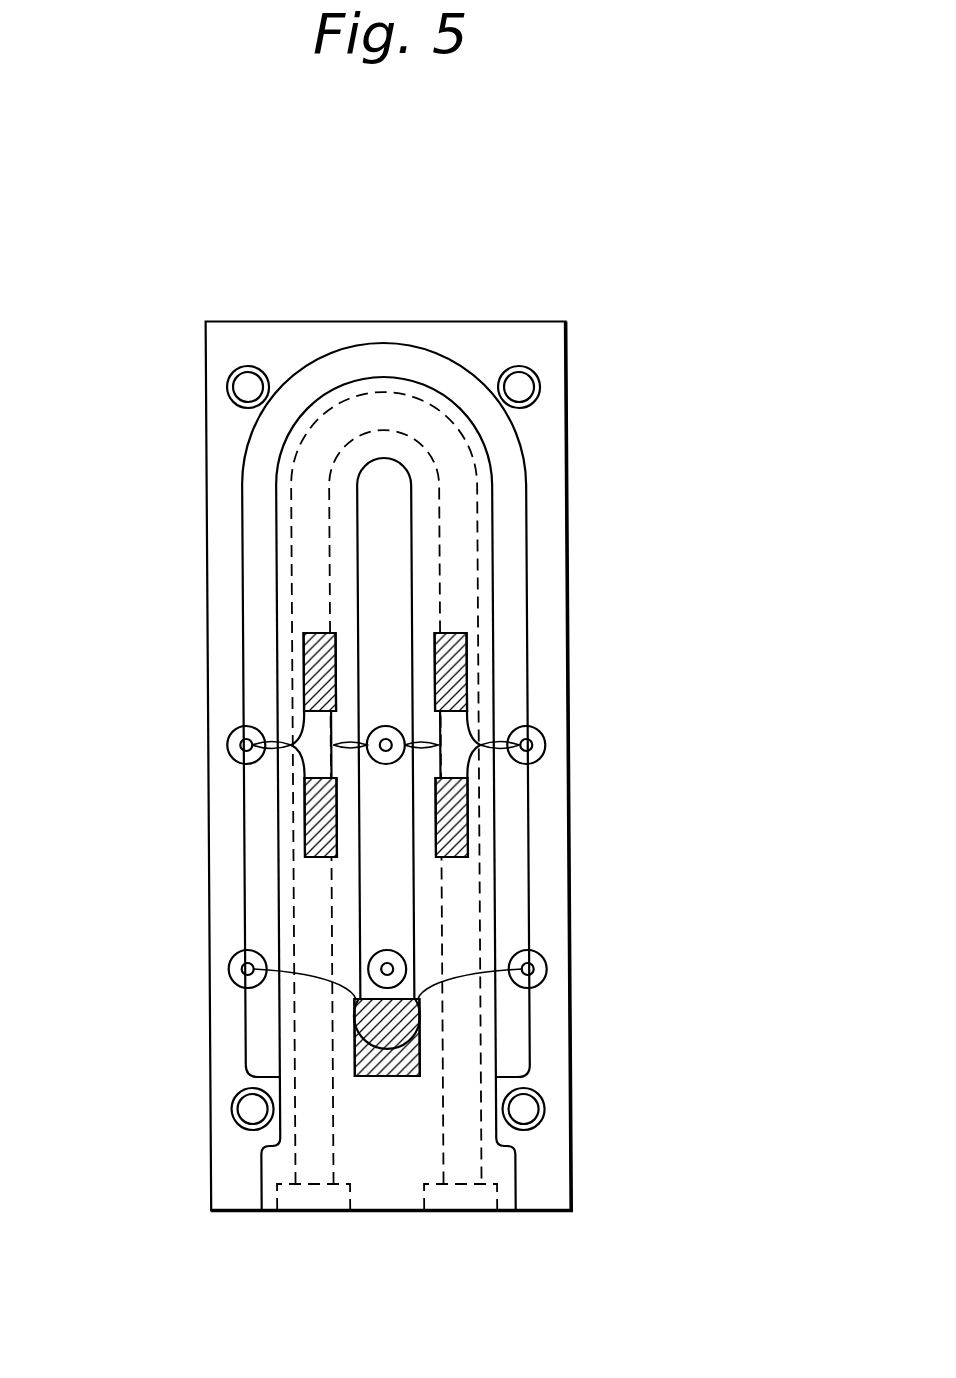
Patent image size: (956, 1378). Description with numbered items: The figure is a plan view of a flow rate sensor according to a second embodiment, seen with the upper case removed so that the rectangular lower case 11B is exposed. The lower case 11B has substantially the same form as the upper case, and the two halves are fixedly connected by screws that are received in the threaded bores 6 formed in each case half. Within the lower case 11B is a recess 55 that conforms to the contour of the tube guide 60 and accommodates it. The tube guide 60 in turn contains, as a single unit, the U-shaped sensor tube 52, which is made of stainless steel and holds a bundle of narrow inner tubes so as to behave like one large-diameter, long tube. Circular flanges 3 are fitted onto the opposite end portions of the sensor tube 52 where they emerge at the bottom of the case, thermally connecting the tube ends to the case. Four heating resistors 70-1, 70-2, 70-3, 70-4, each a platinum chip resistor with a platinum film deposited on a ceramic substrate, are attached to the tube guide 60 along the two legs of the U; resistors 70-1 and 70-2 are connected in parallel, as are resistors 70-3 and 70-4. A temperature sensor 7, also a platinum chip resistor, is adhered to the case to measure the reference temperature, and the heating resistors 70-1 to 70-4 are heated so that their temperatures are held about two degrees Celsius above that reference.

The sensor tube 52 is at (384, 407).
The threaded bores 6 is at (241, 383).
The lower case 11B is at (557, 473).
The recess 55 is at (518, 573).
The heating resistor 70-1 is at (303, 673).
The heating resistor 70-2 is at (303, 820).
The heating resistor 70-3 is at (467, 666).
The heating resistor 70-4 is at (467, 817).
The temperature sensor 7 is at (364, 1077).
The flanges 3 is at (310, 1197).
The tube guide 60 is at (388, 1197).